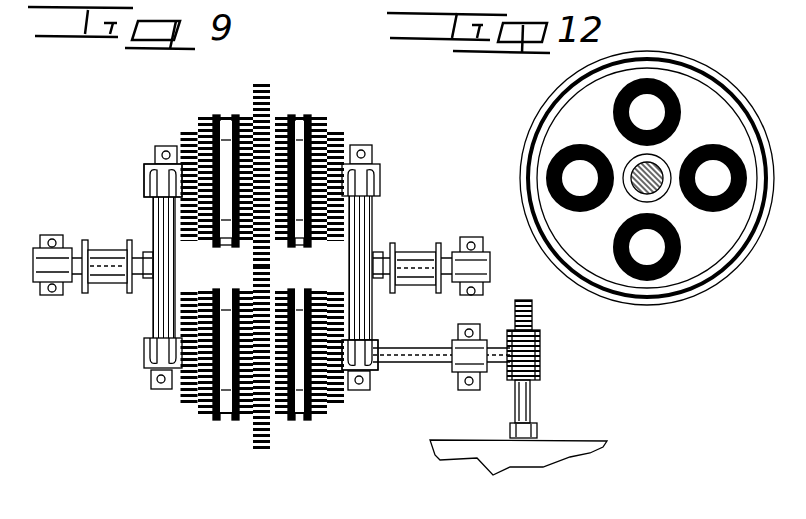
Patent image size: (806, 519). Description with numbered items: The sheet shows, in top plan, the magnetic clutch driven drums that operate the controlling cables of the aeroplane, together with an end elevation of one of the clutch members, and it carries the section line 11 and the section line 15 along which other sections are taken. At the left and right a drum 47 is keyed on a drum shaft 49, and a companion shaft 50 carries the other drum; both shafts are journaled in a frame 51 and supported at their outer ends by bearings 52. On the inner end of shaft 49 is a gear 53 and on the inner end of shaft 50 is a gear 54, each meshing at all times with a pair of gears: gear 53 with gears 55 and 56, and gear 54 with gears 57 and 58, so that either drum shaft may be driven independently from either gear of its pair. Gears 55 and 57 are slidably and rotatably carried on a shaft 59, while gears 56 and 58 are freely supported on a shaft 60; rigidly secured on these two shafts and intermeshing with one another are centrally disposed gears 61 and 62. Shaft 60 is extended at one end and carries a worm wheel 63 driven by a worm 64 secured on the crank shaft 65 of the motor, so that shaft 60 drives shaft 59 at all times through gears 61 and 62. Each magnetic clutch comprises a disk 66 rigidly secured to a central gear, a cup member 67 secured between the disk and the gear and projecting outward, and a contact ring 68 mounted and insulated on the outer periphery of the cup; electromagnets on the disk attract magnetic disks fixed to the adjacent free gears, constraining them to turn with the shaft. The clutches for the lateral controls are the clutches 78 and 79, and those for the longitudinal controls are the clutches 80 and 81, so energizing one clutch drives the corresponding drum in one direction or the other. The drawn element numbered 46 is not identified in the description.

In FIG. 9, the section line 11— 11 is at (115, 168).
In FIG. 9, the section line 15— 15 is at (332, 92).
In FIG. 9, the drum on left shaft 46 is at (108, 280).
In FIG. 9, the drum 47 is at (417, 257).
In FIG. 9, the shaft 49 is at (447, 258).
In FIG. 9, the shaft 50 is at (83, 293).
In FIG. 9, the frame 51 is at (163, 157).
In FIG. 9, the bearing 52 is at (52, 263).
In FIG. 9, the gear 53 is at (322, 262).
In FIG. 9, the gear 54 is at (200, 272).
In FIG. 9, the gear 55 is at (343, 138).
In FIG. 9, the gear 56 is at (338, 406).
In FIG. 9, the gear 57 is at (187, 133).
In FIG. 9, the gear 58 is at (182, 398).
In FIG. 12, the shaft 59 is at (651, 173).
In FIG. 9, the shaft 60 is at (427, 360).
In FIG. 9, the central gear 61 is at (257, 161).
In FIG. 9, the central gear 62 is at (258, 450).
In FIG. 9, the worm wheel 63 is at (532, 317).
In FIG. 9, the worm 64 is at (538, 355).
In FIG. 9, the crank shaft 65 is at (530, 415).
In FIG. 12, the disk 66 is at (703, 256).
In FIG. 12, the cup member 67 is at (675, 290).
In FIG. 9, the contact ring 68 is at (210, 150).
In FIG. 12, the contact ring 68 is at (740, 259).
In FIG. 9, the clutch 78 is at (291, 138).
In FIG. 9, the clutch 79 is at (276, 395).
In FIG. 9, the clutch 80 is at (218, 413).
In FIG. 9, the clutch 81 is at (213, 138).